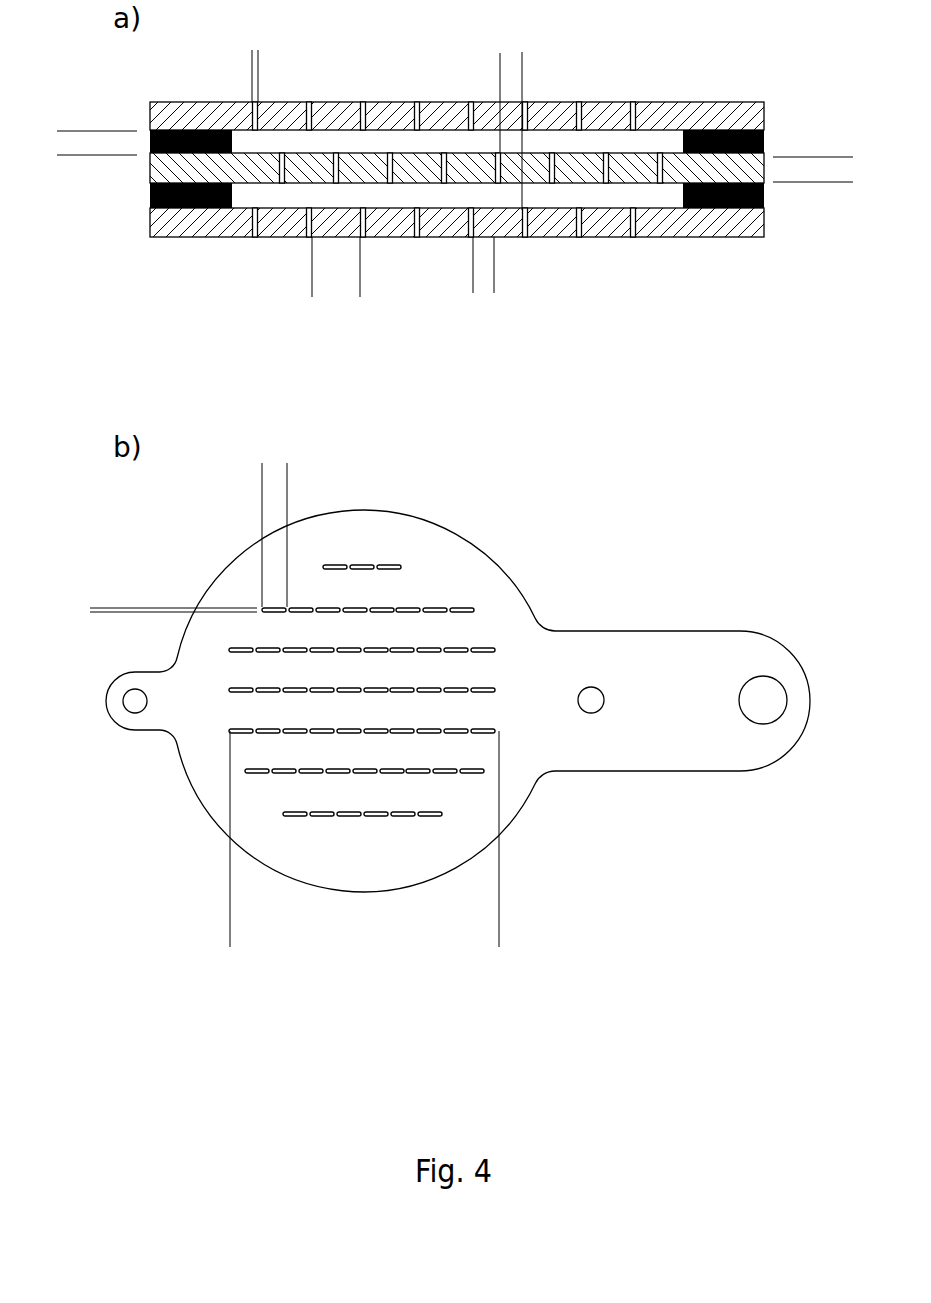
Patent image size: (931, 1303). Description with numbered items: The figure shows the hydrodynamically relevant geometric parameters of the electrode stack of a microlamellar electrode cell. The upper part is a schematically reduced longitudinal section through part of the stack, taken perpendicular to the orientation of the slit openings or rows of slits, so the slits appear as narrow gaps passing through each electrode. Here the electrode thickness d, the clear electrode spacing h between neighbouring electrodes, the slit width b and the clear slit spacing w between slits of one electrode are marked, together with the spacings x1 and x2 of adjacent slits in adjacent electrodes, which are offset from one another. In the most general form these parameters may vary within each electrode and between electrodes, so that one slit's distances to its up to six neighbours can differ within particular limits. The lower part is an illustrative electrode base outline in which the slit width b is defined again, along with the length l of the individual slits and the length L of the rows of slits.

The slit width b is at (205, 65).
The spacing of adjacent slits in adjacent electrodes x2 is at (457, 65).
The clear electrode spacing h is at (75, 85).
The electrode thickness d is at (837, 115).
The clear slit spacing w is at (270, 282).
The spacing of adjacent slits in adjacent electrodes x1 is at (430, 280).
The slit length l is at (218, 482).
The length of the rows of slits L is at (230, 930).